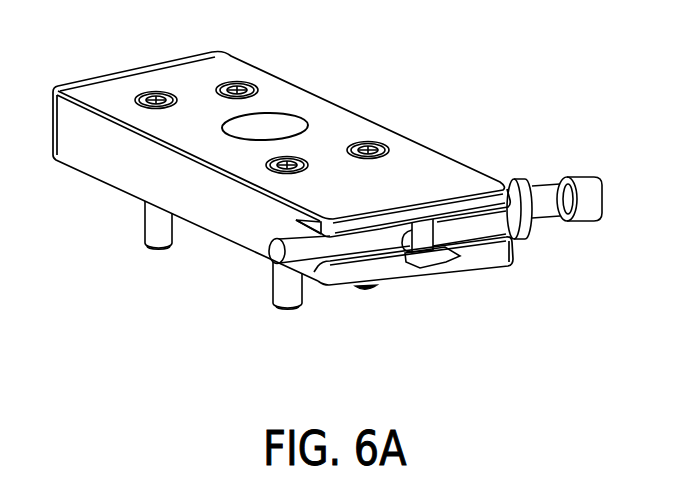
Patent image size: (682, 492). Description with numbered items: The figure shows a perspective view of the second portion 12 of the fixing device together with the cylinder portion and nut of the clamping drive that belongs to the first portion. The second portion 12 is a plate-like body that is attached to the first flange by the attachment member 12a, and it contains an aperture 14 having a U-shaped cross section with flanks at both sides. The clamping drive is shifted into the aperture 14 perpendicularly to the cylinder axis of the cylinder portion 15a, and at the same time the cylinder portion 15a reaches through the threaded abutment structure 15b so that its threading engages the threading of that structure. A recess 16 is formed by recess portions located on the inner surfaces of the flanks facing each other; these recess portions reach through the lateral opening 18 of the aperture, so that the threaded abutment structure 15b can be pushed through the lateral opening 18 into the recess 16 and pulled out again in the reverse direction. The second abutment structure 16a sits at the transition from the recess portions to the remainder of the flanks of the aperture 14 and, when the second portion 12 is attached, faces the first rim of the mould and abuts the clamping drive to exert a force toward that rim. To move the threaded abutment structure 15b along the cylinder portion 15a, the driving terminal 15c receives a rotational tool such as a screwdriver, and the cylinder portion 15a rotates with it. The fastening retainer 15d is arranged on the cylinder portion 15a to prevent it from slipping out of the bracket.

The second portion 12 is at (271, 72).
The attachment member 12a is at (371, 146).
The aperture 14 is at (302, 227).
The cylinder portion 15a is at (306, 288).
The threaded abutment structure 15b is at (423, 271).
The driving terminal 15c is at (587, 175).
The fastening retainer 15d is at (508, 179).
The recess 16 is at (429, 277).
The second abutment structure 16a is at (452, 254).
The lateral opening 18 is at (506, 267).